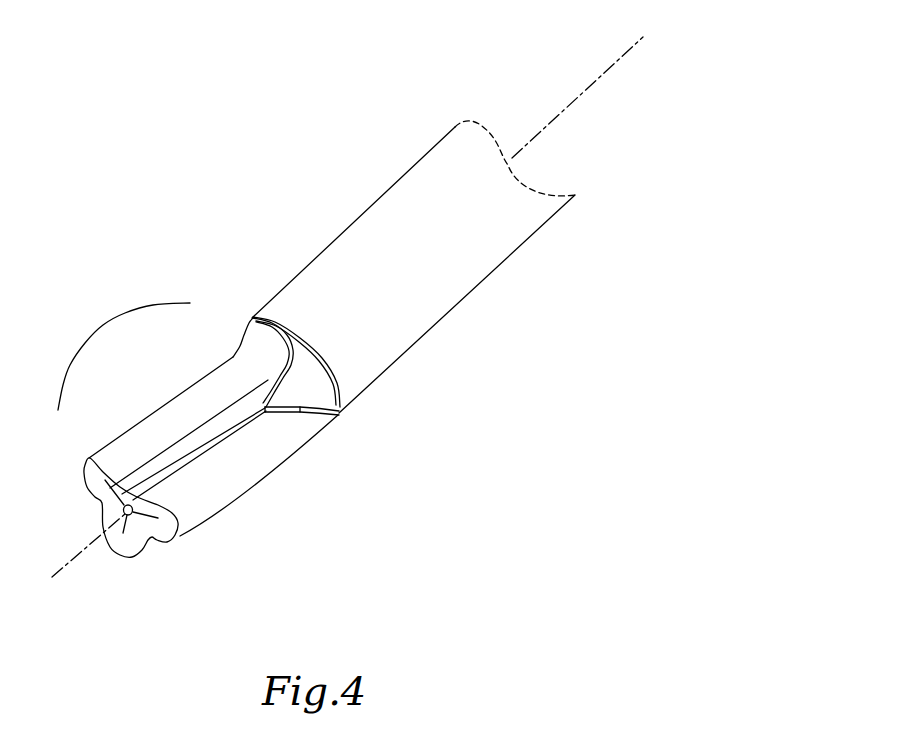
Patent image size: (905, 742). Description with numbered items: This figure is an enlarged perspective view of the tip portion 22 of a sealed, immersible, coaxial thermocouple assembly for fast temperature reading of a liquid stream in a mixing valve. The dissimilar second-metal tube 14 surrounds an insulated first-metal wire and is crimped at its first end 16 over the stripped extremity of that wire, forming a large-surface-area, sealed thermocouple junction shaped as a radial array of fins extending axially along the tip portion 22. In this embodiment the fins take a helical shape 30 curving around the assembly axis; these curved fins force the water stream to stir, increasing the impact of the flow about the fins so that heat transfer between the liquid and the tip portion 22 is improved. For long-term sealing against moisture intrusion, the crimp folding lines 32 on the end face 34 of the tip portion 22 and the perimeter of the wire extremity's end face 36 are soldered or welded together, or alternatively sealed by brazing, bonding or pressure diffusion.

The second-metal tube 14 is at (347, 225).
The first end 16 is at (108, 443).
The tip portion 22 is at (100, 327).
The helical shape 30 is at (232, 505).
The crimp folding lines 32 is at (106, 498).
The end face 34 is at (133, 547).
The end face 36 is at (149, 540).